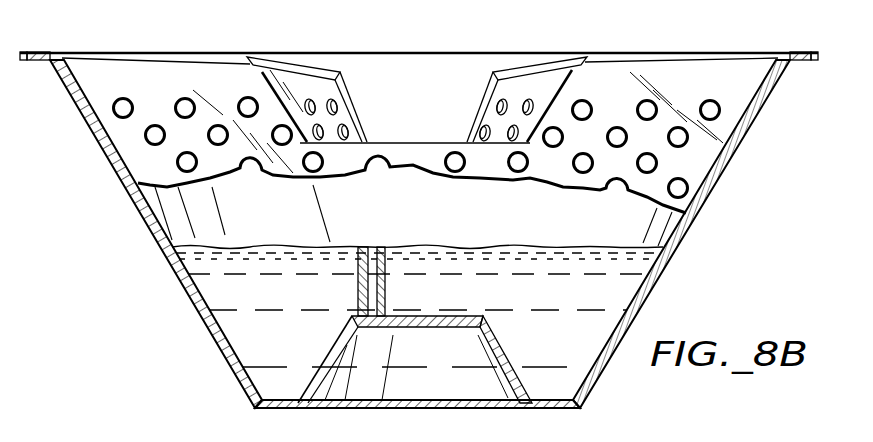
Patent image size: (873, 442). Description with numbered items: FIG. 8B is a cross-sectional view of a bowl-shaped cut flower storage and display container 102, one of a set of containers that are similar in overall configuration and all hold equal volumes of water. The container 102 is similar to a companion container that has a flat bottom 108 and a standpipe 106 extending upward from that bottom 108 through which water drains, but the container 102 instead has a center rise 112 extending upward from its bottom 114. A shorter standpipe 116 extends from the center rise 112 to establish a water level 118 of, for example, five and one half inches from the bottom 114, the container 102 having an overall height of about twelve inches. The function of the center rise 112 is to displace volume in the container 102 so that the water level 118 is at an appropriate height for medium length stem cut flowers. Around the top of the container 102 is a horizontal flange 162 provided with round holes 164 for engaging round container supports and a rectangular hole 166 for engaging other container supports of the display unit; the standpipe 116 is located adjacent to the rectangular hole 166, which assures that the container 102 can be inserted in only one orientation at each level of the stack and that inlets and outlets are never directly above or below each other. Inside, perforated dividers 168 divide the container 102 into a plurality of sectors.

The container 102 is at (145, 240).
The standpipe 106 is at (365, 0).
The bottom 108 is at (576, 4).
The center rise 112 is at (500, 403).
The bottom 114 is at (273, 413).
The standpipe 116 is at (368, 247).
The water level 118 is at (502, 247).
The horizontal flange 162 is at (26, 50).
The round hole 164 is at (805, 51).
The rectangular hole 166 is at (33, 52).
The perforated divider 168 is at (222, 78).